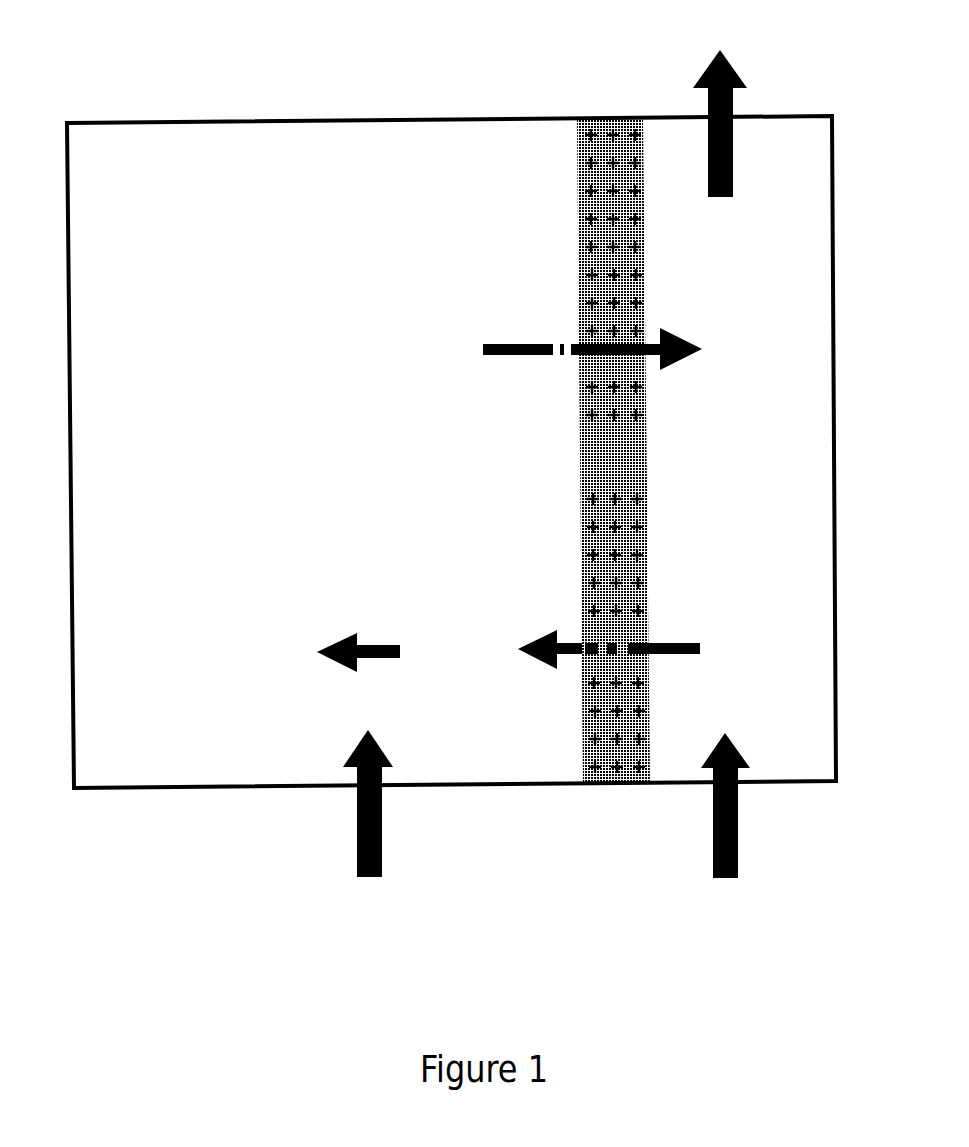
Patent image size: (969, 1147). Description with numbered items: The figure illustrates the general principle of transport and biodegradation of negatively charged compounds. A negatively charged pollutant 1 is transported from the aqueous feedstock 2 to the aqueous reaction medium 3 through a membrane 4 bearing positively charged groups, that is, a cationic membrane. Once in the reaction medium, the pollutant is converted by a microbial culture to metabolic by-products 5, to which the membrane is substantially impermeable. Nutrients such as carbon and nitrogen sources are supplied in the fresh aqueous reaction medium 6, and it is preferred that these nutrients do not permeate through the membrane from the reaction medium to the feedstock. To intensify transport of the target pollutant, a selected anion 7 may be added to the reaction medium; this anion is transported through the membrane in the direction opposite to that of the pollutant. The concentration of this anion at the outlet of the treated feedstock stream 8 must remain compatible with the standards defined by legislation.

The negatively charged pollutant 1 is at (604, 654).
The aqueous feedstock 2 is at (725, 840).
The aqueous reaction medium 3 is at (451, 452).
The membrane 4 is at (613, 450).
The metabolic by-products 5 is at (316, 656).
The fresh aqueous reaction medium 6 is at (368, 838).
The anion 7 is at (575, 351).
The treated feedstock stream 8 is at (720, 98).